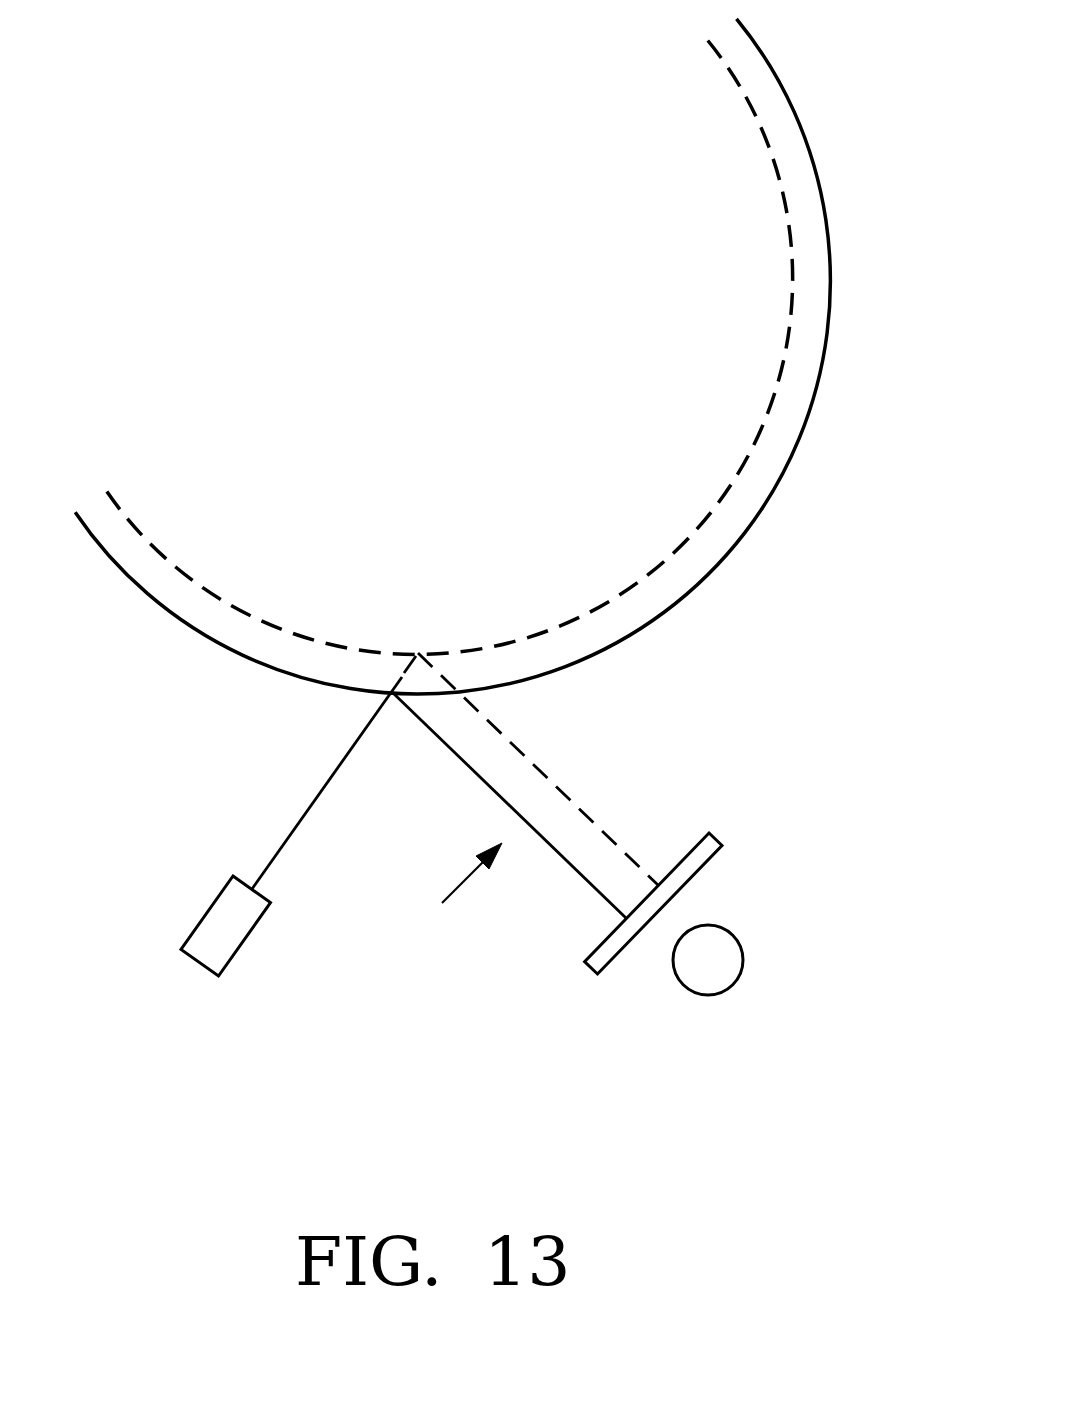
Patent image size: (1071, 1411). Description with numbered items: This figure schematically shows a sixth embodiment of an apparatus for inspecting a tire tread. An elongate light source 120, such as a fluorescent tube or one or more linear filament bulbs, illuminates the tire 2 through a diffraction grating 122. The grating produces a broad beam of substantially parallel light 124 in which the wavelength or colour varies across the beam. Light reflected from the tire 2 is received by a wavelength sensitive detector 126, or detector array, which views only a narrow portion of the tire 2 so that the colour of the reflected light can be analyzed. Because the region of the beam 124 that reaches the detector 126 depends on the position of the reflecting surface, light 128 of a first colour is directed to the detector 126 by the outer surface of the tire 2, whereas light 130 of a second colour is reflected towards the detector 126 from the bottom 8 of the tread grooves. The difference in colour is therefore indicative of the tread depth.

The tire 2 is at (833, 300).
The bottom of the grooves 8 is at (238, 607).
The elongate light source 120 is at (722, 970).
The diffraction grating 122 is at (607, 965).
The broad beam of substantially parallel light 124 is at (442, 893).
The wavelength sensitive detector 126 is at (222, 924).
The light of a first color 128 is at (473, 772).
The light of a second color 130 is at (553, 782).